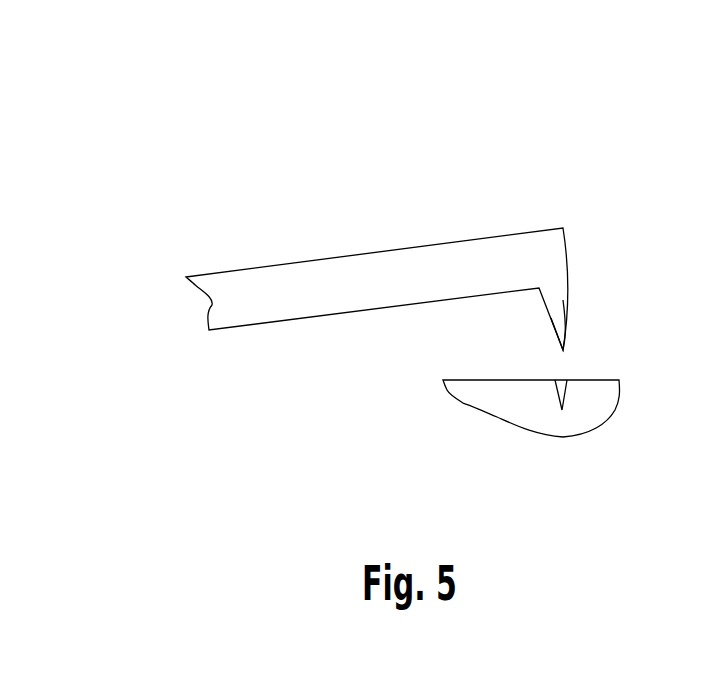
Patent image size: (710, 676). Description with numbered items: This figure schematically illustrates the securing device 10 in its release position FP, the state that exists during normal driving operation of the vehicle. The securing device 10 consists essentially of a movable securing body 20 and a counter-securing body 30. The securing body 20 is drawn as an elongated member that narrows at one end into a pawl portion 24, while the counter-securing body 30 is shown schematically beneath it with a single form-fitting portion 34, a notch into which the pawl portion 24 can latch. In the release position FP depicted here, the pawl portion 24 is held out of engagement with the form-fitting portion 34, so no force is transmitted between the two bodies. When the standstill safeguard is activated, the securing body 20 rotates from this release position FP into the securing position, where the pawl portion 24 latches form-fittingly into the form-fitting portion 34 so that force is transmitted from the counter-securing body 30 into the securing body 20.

The securing device 10 is at (278, 102).
The securing body 20 is at (357, 262).
The pawl portion 24 is at (560, 318).
The counter-securing body 30 is at (595, 417).
The form-fitting portion 34 is at (563, 380).
The release position FP is at (507, 177).